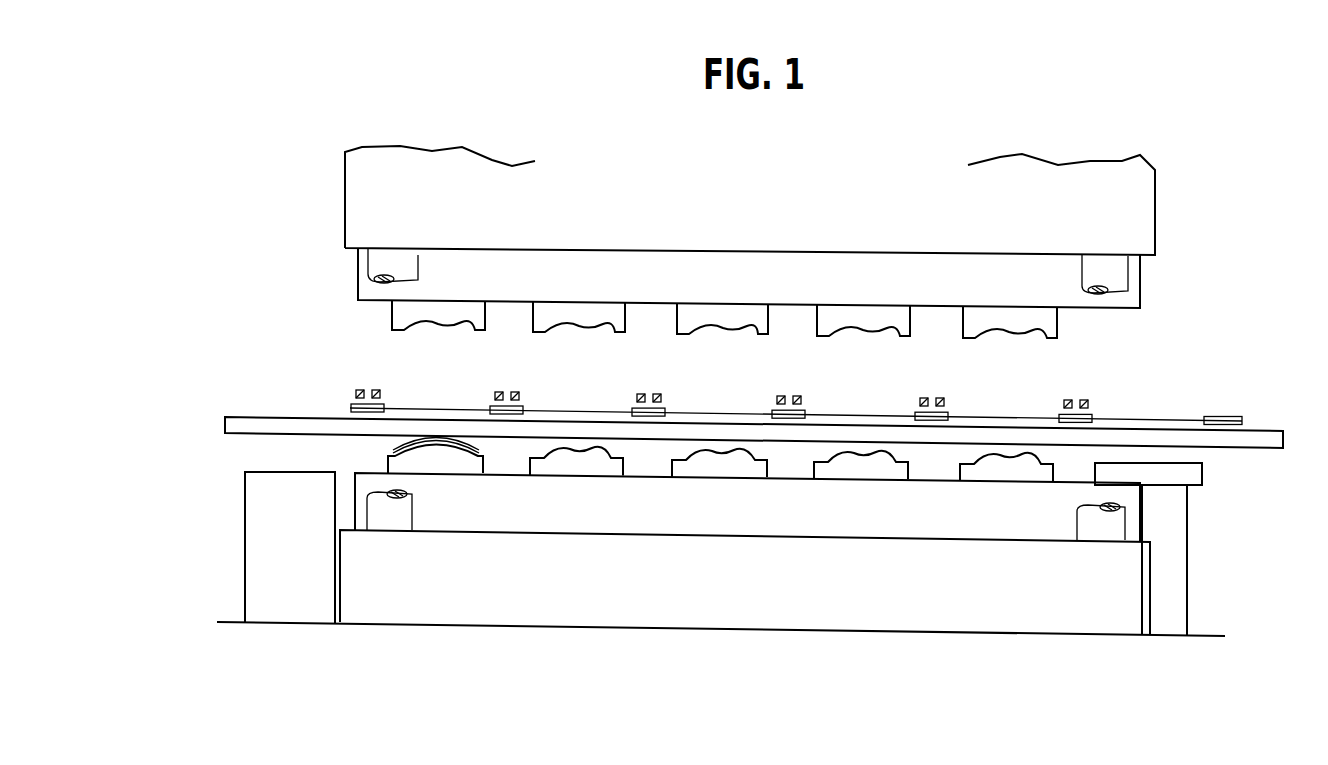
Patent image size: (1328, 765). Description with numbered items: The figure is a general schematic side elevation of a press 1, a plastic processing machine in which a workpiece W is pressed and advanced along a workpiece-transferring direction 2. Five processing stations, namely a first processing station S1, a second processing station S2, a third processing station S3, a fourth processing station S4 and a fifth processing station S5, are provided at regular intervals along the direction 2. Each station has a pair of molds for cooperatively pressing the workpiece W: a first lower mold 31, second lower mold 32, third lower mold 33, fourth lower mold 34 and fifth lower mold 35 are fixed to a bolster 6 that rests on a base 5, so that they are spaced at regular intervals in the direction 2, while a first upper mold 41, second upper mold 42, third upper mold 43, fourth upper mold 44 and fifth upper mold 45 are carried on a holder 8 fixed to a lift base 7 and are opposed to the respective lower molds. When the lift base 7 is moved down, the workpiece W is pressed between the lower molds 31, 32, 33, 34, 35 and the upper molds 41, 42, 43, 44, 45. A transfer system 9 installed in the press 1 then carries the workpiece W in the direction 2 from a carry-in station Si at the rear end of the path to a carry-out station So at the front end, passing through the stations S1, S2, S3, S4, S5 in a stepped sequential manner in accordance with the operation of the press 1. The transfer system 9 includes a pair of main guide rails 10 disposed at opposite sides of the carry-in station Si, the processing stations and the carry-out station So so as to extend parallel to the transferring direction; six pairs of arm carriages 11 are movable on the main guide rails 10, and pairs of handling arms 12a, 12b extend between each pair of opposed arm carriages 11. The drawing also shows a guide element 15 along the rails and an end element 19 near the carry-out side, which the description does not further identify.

The press 1 is at (333, 309).
The workpiece-transferring direction 2 is at (300, 349).
The base 5 is at (672, 604).
The bolster 6 is at (803, 534).
The lift base 7 is at (681, 199).
The holder 8 is at (810, 258).
The transfer system 9 is at (708, 388).
The main guide rail 10 is at (1262, 432).
The arm carriage 11 is at (351, 408).
The handling arm 12a is at (388, 381).
The handling arm 12b is at (358, 390).
The guide rail 15 is at (993, 414).
The end clamp 19 is at (1222, 416).
The first lower mold 31 is at (441, 473).
The second lower mold 32 is at (572, 475).
The third lower mold 33 is at (719, 477).
The fourth lower mold 34 is at (867, 479).
The fifth lower mold 35 is at (1012, 481).
The first upper mold 41 is at (394, 317).
The second upper mold 42 is at (535, 319).
The third upper mold 43 is at (679, 321).
The fourth upper mold 44 is at (819, 323).
The fifth upper mold 45 is at (965, 325).
The workpiece W is at (431, 436).
The first processing station S1 is at (384, 458).
The second processing station S2 is at (526, 461).
The third processing station S3 is at (668, 462).
The fourth processing station S4 is at (810, 464).
The fifth processing station S5 is at (956, 466).
The carry-in station Si is at (240, 512).
The carry-out station So is at (1212, 523).